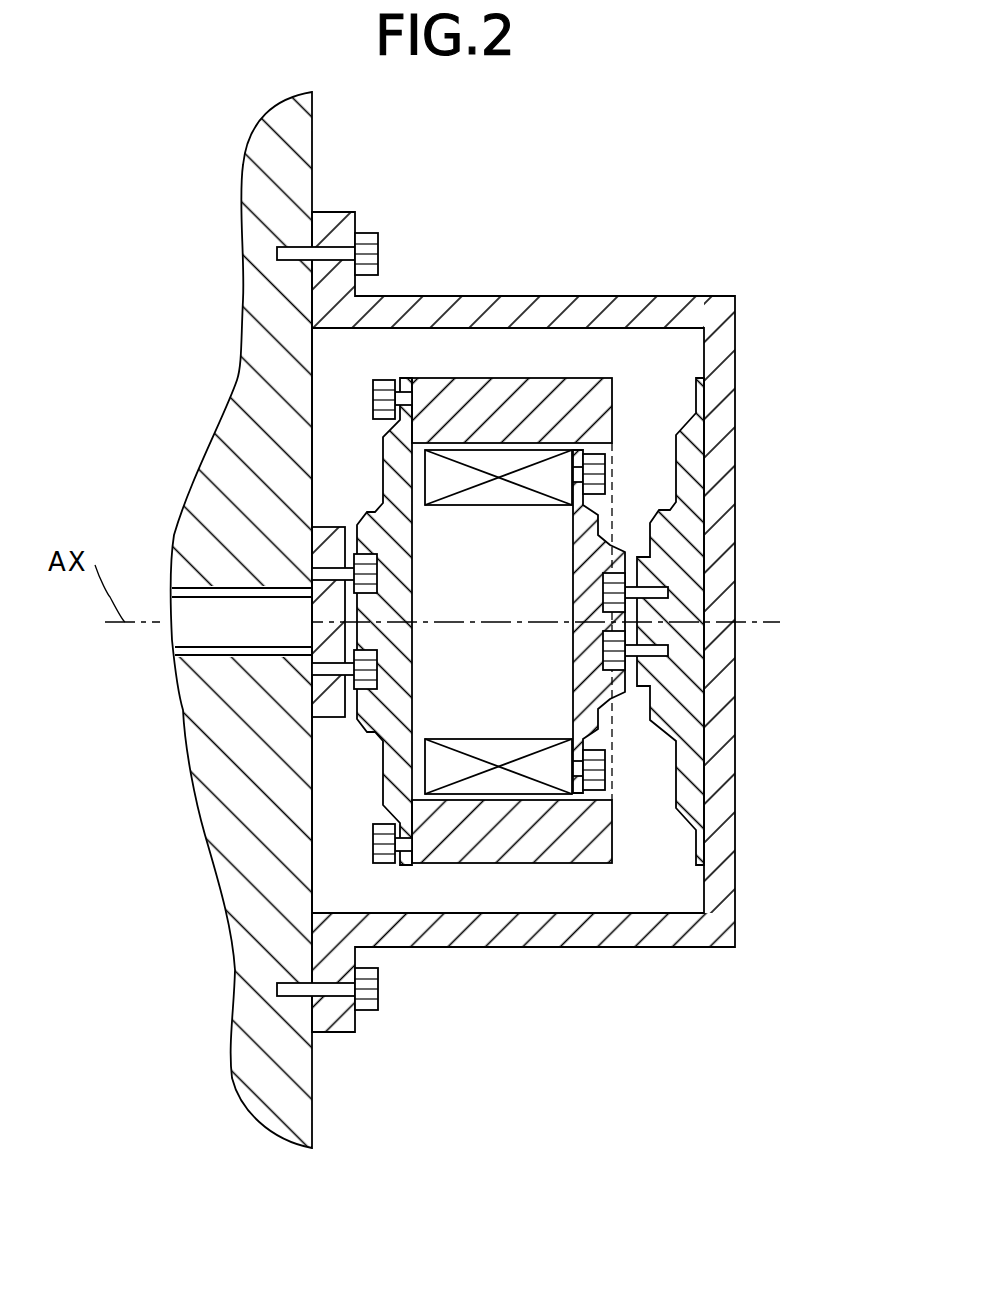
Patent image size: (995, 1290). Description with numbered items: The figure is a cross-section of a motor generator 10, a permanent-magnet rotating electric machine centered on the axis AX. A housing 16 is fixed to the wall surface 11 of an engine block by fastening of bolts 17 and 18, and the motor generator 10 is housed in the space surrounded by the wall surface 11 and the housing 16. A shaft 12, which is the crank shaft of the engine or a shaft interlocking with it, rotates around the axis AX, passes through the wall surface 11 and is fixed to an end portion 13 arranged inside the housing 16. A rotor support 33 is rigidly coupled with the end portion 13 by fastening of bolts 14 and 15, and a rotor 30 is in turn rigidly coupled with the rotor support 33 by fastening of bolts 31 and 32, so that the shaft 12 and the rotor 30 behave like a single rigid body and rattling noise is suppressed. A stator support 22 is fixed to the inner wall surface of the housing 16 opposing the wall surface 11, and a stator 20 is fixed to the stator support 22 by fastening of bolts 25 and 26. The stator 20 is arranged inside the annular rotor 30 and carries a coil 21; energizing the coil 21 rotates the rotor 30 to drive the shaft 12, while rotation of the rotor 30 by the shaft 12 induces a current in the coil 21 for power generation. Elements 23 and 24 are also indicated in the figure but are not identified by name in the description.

The motor generator 10 is at (750, 145).
The wall surface 11 is at (253, 225).
The shaft 12 is at (203, 607).
The end portion 13 is at (331, 645).
The bolt 14 is at (330, 560).
The bolt 15 is at (330, 690).
The housing 16 is at (697, 298).
The bolt 17 is at (367, 232).
The bolt 18 is at (370, 1012).
The stator 20 is at (608, 712).
The coil 21 is at (523, 797).
The stator support 22 is at (688, 540).
The screw 23 is at (610, 475).
The screw 24 is at (605, 787).
The bolt 25 is at (668, 590).
The bolt 26 is at (670, 652).
The rotor 30 is at (517, 400).
The bolt 31 is at (385, 377).
The bolt 32 is at (385, 865).
The rotor support 33 is at (393, 768).